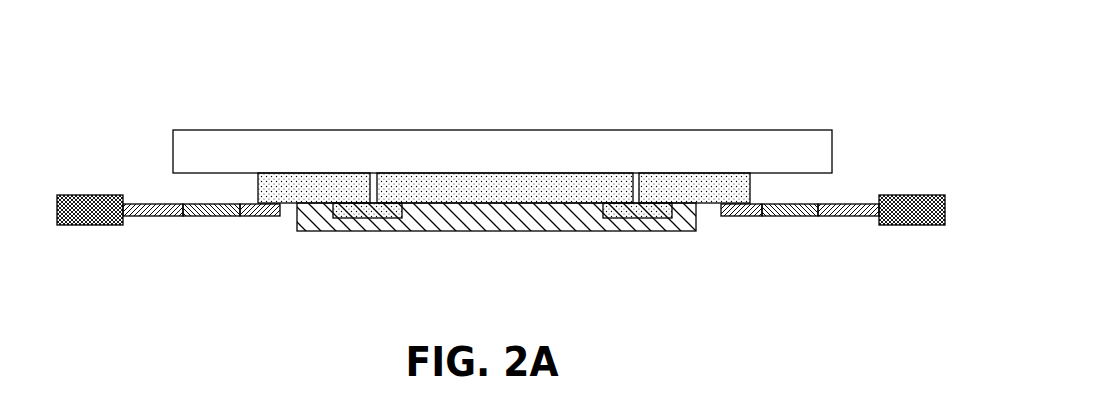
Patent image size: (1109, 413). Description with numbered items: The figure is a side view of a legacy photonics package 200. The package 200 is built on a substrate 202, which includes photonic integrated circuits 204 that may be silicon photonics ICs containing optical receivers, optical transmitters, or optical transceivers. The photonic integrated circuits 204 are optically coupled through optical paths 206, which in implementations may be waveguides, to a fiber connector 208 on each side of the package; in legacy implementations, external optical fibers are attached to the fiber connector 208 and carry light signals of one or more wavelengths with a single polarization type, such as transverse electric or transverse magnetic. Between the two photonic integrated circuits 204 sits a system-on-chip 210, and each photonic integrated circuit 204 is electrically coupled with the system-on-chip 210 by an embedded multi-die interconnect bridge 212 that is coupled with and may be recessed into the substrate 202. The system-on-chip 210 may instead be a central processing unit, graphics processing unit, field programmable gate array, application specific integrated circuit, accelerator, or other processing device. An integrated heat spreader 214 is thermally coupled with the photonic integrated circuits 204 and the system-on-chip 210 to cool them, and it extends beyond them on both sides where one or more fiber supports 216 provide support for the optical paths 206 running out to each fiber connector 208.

The package 200 is at (727, 42).
The substrate 202 is at (520, 231).
The photonic integrated circuits (PIC) 204 is at (345, 180).
The optical paths 206 is at (152, 218).
The fiber connector 208 is at (93, 195).
The system-on-chip (SOC) 210 is at (435, 186).
The embedded multi-die interconnect bridge (EMIB) 212 is at (370, 218).
The integrated heat spreader (IHS) 214 is at (398, 145).
The fiber supports 216 is at (168, 188).